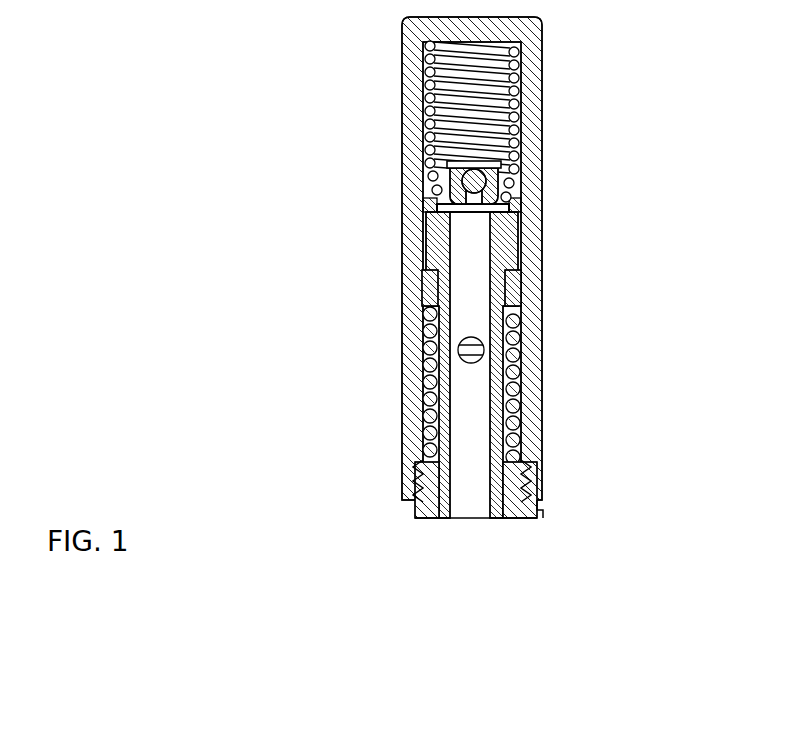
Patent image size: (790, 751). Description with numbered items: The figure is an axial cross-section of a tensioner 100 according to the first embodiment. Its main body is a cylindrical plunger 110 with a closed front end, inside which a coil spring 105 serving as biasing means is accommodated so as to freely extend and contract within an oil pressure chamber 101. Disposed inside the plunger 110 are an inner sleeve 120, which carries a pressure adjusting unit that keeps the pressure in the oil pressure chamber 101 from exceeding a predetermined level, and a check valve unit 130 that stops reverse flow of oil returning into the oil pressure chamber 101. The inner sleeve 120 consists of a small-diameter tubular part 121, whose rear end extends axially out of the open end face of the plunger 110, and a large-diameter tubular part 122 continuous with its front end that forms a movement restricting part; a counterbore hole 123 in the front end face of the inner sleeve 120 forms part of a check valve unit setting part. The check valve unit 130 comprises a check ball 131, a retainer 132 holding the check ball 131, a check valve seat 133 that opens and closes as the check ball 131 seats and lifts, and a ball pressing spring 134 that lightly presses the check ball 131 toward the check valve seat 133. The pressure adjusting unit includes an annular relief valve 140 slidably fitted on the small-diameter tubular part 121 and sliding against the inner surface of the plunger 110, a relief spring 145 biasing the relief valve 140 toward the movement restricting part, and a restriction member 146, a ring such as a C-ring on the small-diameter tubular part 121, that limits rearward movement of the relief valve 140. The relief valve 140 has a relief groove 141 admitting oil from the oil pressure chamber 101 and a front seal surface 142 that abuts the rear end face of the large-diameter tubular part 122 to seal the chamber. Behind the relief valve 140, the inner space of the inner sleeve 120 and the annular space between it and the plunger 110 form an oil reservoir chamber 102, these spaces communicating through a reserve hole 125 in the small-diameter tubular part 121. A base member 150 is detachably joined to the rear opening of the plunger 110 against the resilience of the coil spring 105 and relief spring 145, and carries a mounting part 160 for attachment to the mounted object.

The tensioner 100 is at (396, 50).
The oil pressure chamber 101 is at (453, 114).
The oil reservoir chamber 102 is at (462, 415).
The coil spring 105 is at (541, 113).
The plunger 110 is at (541, 60).
The inner sleeve 120 is at (297, 194).
The small-diameter tubular part 121 is at (428, 291).
The large-diameter tubular part 122 is at (428, 256).
The counterbore hole 123 is at (430, 207).
The reserve hole 125 is at (458, 346).
The check valve unit 130 is at (562, 183).
The check ball 131 is at (505, 182).
The retainer 132 is at (500, 197).
The check valve seat 133 is at (505, 212).
The ball pressing spring 134 is at (538, 151).
The relief valve 140 is at (599, 287).
The relief groove 141 is at (512, 300).
The front seal surface 142 is at (515, 276).
The relief spring 145 is at (523, 374).
The restriction member 146 is at (523, 323).
The base member 150 is at (410, 512).
The mounting part 160 is at (548, 512).